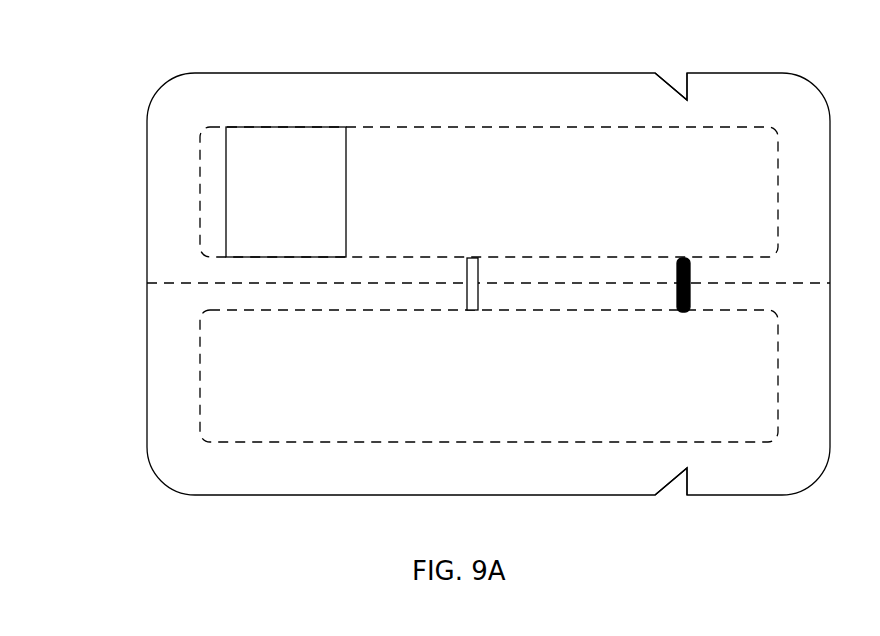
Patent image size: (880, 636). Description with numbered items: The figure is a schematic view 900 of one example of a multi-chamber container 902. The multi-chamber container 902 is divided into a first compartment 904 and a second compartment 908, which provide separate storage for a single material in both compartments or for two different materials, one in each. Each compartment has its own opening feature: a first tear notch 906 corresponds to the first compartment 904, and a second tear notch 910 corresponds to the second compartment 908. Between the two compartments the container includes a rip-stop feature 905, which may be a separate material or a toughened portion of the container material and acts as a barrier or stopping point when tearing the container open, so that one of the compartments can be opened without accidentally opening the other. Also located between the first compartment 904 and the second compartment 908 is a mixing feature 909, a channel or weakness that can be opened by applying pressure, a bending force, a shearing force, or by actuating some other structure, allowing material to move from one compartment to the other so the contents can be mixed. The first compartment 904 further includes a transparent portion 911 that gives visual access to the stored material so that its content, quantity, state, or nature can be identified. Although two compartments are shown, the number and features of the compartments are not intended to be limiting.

The schematic view 900 is at (89, 54).
The multi-chamber container 902 is at (385, 73).
The first compartment 904 is at (429, 191).
The rip-stop feature 905 is at (684, 258).
The first tear notch 906 is at (665, 82).
The second compartment 908 is at (429, 399).
The mixing feature 909 is at (474, 258).
The second tear notch 910 is at (662, 488).
The transparent portion 911 is at (302, 206).